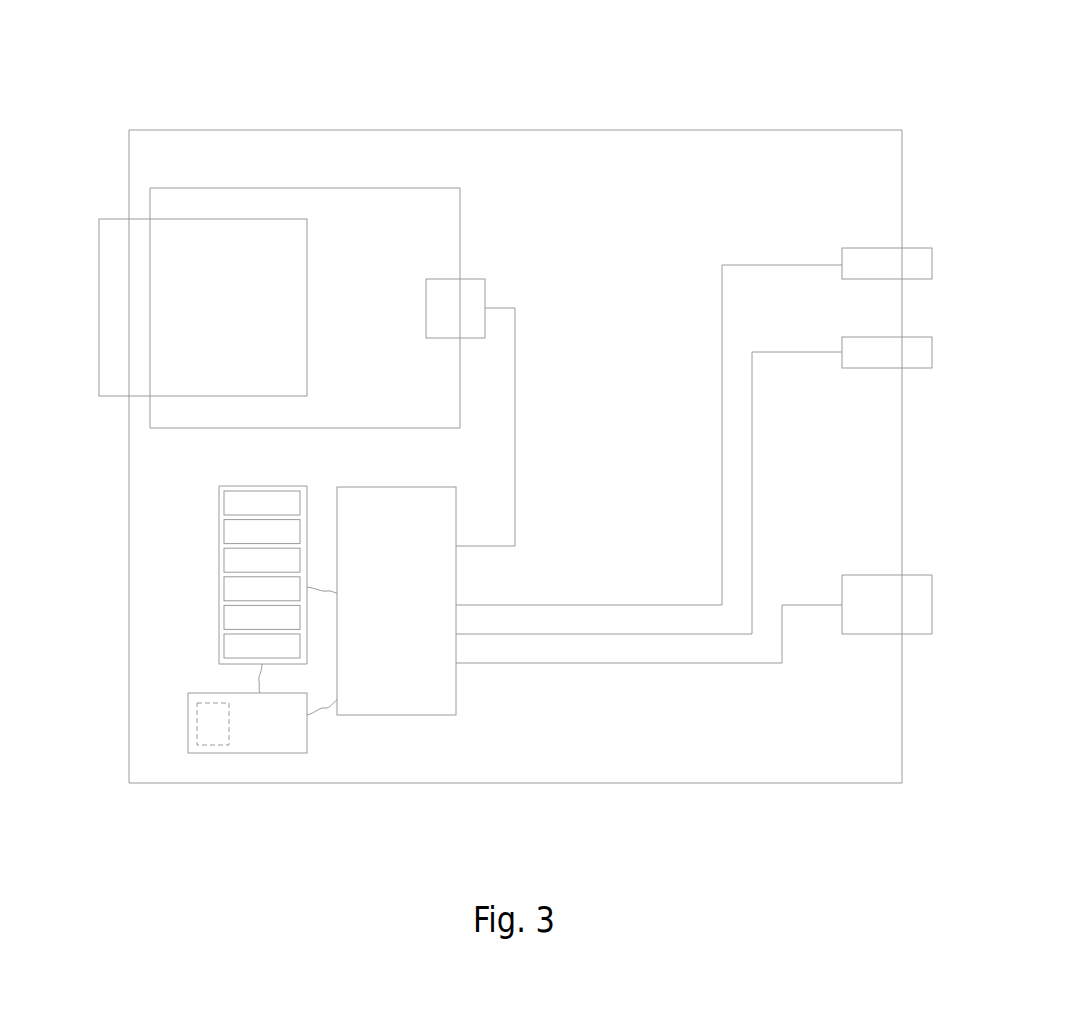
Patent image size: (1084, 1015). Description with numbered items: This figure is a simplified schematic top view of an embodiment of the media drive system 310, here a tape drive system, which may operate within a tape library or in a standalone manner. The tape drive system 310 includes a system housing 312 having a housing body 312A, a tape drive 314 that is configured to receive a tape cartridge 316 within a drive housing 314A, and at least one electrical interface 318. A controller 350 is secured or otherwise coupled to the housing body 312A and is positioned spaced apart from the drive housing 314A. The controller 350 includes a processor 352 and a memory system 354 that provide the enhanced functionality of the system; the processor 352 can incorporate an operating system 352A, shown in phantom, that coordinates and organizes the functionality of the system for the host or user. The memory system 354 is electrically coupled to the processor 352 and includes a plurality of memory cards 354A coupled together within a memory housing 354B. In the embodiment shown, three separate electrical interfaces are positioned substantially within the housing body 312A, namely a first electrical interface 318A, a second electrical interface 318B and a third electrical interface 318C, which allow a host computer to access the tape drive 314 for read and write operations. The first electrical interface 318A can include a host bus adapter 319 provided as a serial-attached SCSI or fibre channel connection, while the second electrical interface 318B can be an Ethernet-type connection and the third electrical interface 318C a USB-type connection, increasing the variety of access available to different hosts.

The media drive system 310 is at (645, 107).
The system housing 312 is at (515, 406).
The housing body 312A is at (515, 72).
The tape drive 314 is at (218, 187).
The drive housing 314A is at (305, 128).
The tape cartridge 316 is at (185, 324).
The electrical interface 318 is at (881, 553).
The first electrical interface 318A is at (858, 617).
The second electrical interface 318B is at (860, 365).
The third electrical interface 318C is at (859, 276).
The host bus adapter 319 is at (865, 746).
The controller 350 is at (383, 715).
The processor 352 is at (248, 739).
The operating system 352A is at (200, 770).
The memory system 354 is at (219, 568).
The memory card 354A is at (242, 502).
The memory housing 354B is at (219, 640).